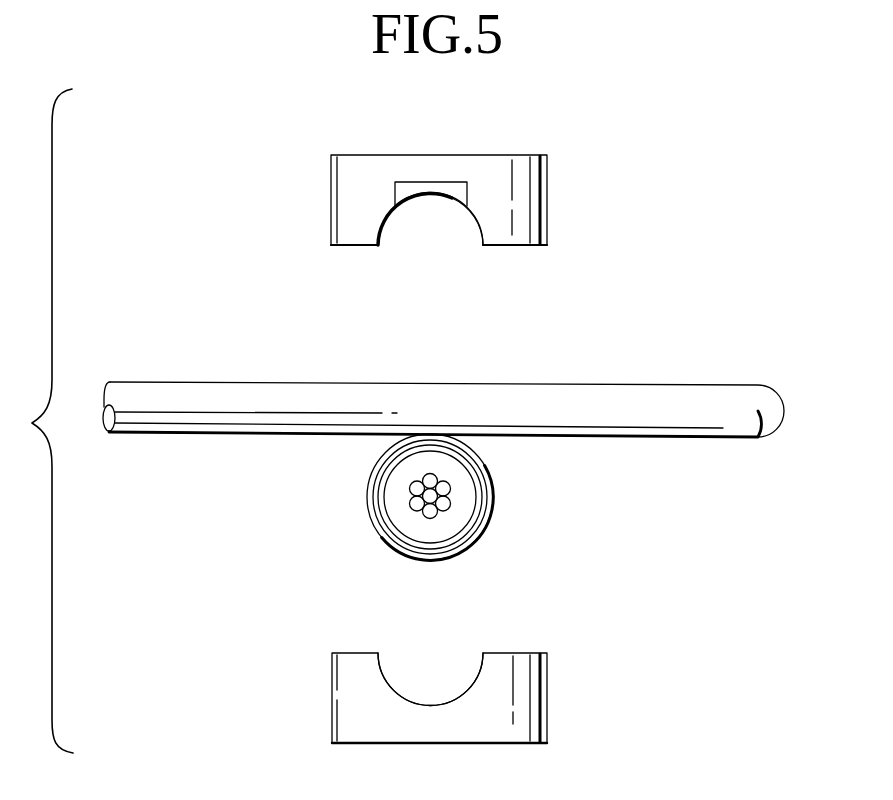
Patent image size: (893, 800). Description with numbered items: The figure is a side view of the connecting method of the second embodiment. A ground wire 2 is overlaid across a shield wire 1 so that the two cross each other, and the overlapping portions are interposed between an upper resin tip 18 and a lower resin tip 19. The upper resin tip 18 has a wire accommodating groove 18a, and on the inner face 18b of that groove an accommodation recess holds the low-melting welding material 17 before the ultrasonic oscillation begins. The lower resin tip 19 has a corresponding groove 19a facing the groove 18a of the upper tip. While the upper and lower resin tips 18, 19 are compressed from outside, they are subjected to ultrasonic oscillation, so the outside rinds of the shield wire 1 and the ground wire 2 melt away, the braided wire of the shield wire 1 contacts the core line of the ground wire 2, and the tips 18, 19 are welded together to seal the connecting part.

The shield wire 1 is at (495, 497).
The ground wire 2 is at (642, 395).
The low-melting welding material 17 is at (405, 187).
The upper resin tip 18 is at (505, 168).
The wire accommodating groove 18a is at (425, 213).
The inner face 18b is at (472, 217).
The lower resin tip 19 is at (525, 706).
The arcuate groove 19a is at (425, 692).